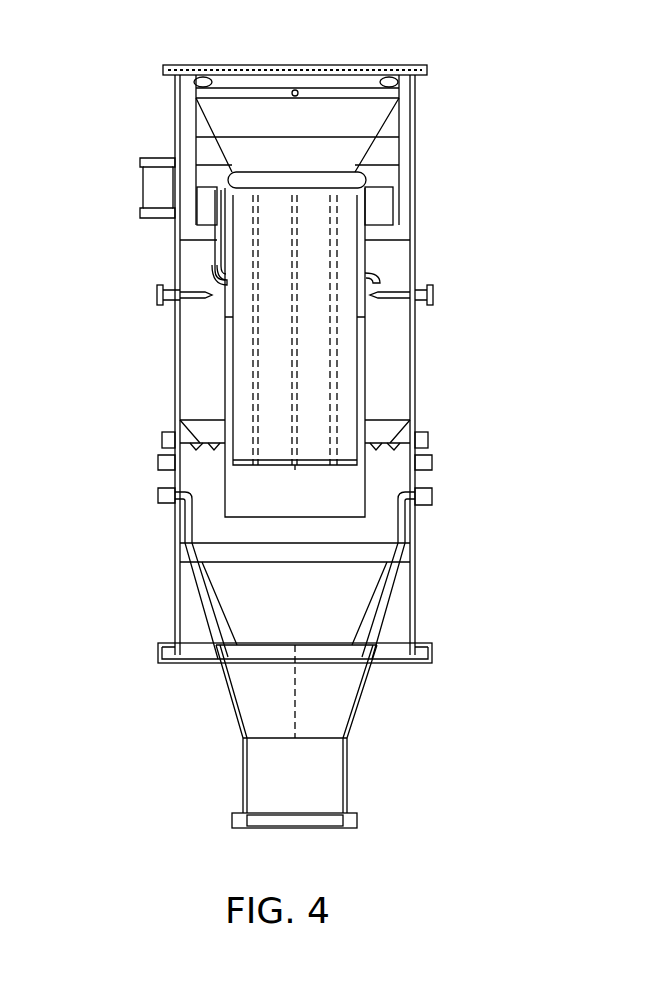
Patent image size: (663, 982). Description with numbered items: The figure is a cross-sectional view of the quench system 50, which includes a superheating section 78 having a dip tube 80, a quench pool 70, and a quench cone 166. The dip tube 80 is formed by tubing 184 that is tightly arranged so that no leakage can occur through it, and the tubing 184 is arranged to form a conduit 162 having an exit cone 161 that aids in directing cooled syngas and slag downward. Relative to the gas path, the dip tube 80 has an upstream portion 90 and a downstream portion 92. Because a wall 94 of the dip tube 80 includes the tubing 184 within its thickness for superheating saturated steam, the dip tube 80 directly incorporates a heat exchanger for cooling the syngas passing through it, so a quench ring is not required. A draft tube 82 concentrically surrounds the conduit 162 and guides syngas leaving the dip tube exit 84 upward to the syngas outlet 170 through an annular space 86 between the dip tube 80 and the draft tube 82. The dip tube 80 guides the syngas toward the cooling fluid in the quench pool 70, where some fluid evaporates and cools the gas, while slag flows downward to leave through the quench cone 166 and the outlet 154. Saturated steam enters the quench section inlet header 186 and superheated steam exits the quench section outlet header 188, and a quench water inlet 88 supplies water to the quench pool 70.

The quench system 50 is at (92, 428).
The quench pool 70 is at (375, 532).
The superheating section 78 is at (405, 202).
The dip tube 80 is at (345, 320).
The draft tube 82 is at (200, 468).
The dip tube exit 84 is at (272, 470).
The annular space 86 is at (225, 378).
The quench water inlet 88 is at (385, 470).
The upstream portion 90 is at (250, 93).
The downstream portion 92 is at (313, 470).
The wall 94 is at (225, 335).
The outlet 154 is at (293, 830).
The exit cone 161 is at (372, 125).
The conduit 162 is at (350, 270).
The quench cone 166 is at (340, 706).
The syngas outlet 170 is at (156, 172).
The tubing 184 is at (340, 368).
The quench section inlet header 186 is at (430, 442).
The quench section outlet header 188 is at (428, 70).